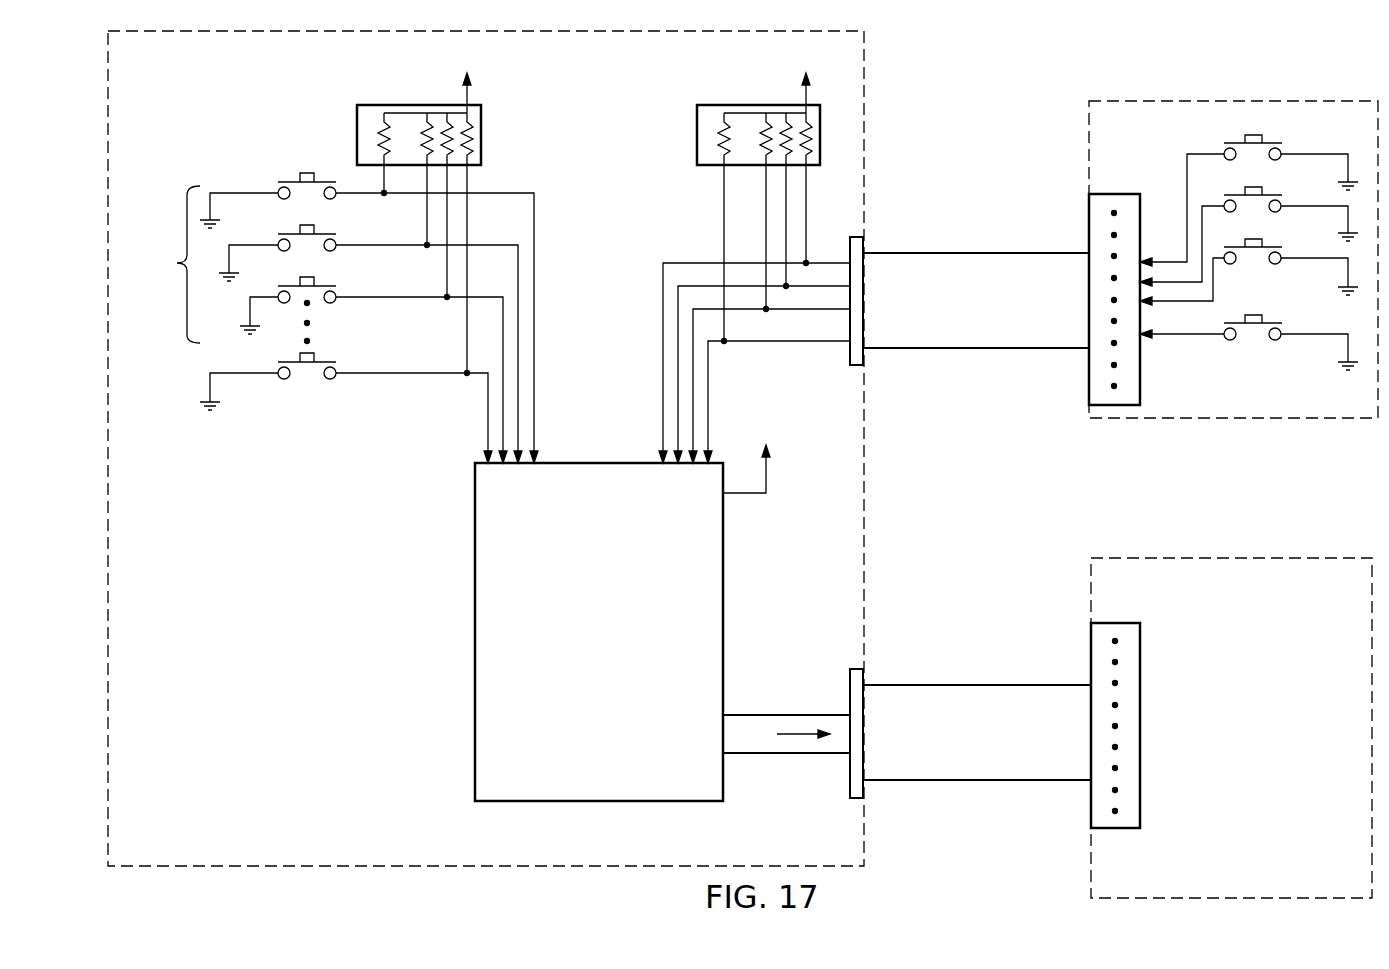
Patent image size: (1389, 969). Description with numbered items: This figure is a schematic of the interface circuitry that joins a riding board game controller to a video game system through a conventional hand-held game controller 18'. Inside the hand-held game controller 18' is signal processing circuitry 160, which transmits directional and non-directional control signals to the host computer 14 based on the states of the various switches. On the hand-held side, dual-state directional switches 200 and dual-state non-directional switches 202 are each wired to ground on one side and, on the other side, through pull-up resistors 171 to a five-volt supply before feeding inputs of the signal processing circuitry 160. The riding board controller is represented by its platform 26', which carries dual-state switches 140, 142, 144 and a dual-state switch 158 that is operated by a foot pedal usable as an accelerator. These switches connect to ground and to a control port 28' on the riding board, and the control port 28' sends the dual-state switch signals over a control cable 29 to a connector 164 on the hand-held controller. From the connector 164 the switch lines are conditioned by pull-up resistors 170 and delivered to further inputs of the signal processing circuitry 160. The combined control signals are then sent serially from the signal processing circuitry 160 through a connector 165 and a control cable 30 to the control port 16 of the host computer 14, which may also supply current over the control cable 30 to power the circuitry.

The host computer 14 is at (1243, 558).
The control port 16 is at (1116, 623).
The hand-held game controller 18' is at (522, 448).
The platform 26' is at (1233, 291).
The control port 28' is at (1116, 270).
The control cable 29 is at (941, 253).
The control cable 30 is at (948, 685).
The dual-state switch 140 is at (1268, 142).
The dual-state switch 142 is at (1267, 194).
The dual-state switch 144 is at (1267, 246).
The dual-state switch 158 is at (1268, 322).
The signal processing circuitry 160 is at (617, 594).
The connector 164 is at (857, 366).
The connector 165 is at (852, 669).
The pull-up resistors 170 is at (718, 105).
The pull-up resistors 171 is at (378, 105).
The dual-state directional switches 200 is at (327, 314).
The dual-state non-directional switches 202 is at (314, 366).